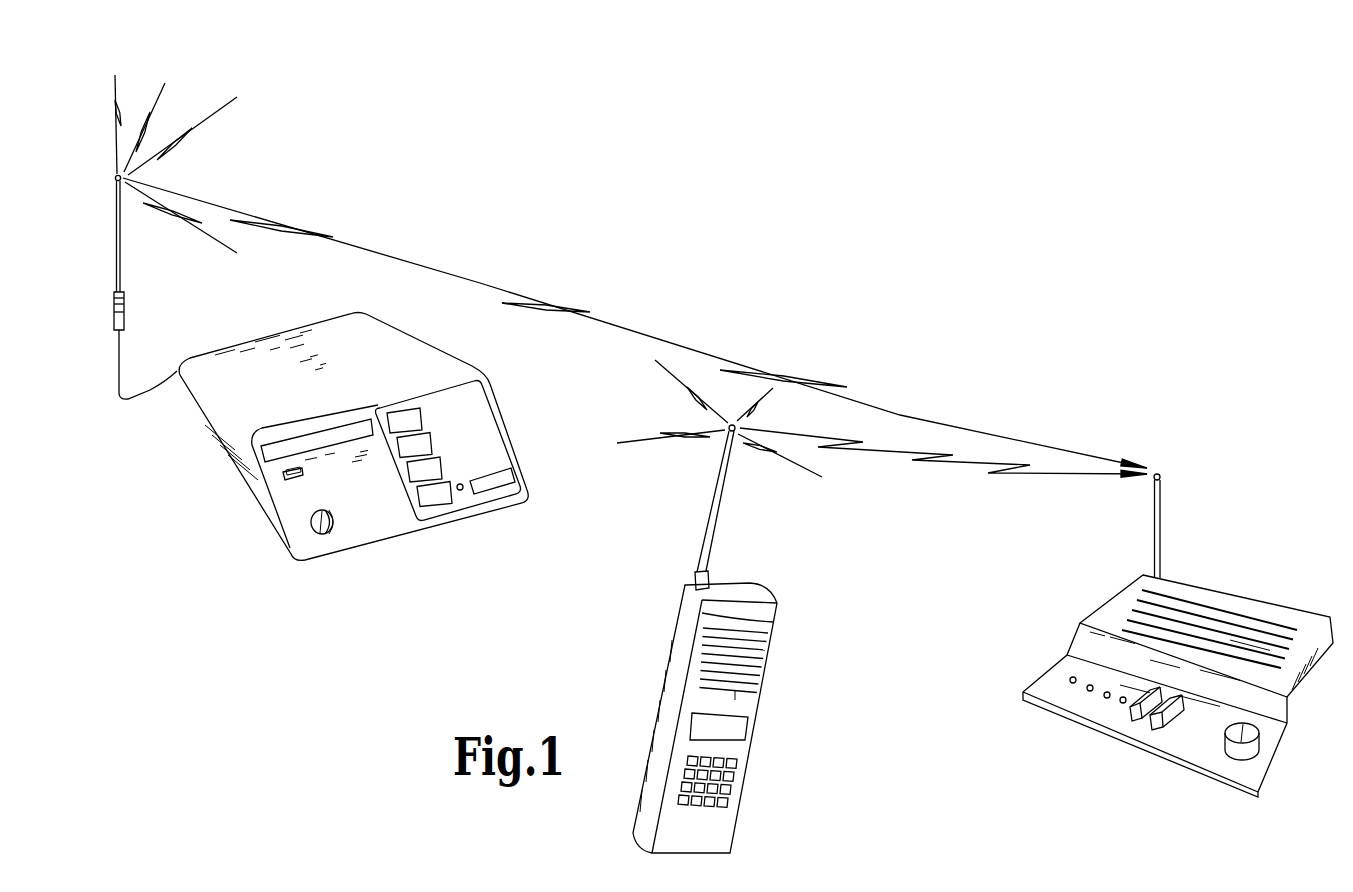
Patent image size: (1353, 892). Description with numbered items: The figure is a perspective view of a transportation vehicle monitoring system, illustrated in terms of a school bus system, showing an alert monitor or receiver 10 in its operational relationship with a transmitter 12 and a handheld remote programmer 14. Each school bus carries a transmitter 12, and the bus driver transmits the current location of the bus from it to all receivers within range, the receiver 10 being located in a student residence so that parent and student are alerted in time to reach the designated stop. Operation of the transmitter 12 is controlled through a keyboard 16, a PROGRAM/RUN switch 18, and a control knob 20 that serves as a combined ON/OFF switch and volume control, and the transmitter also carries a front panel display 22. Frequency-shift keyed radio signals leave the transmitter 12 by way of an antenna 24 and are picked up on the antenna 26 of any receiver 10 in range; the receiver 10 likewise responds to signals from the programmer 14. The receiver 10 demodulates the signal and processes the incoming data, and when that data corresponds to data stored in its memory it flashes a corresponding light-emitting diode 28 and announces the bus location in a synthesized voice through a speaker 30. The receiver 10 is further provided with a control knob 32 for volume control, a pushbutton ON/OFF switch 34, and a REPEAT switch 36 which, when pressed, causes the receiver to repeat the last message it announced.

The alert monitor 10 is at (1174, 682).
The transmitter 12 is at (461, 365).
The handheld remote programmer 14 is at (772, 648).
The keyboard 16 is at (497, 428).
The PROGRAM/RUN switch 18 is at (292, 481).
The control knob 20 is at (333, 534).
The front panel display 22 is at (277, 453).
The antenna 24 is at (121, 284).
The antenna 26 is at (1162, 532).
The light-emitting diode 28 is at (1070, 680).
The speaker 30 is at (1297, 622).
The control knob 32 is at (1259, 747).
The pushbutton ON/OFF switch 34 is at (1158, 724).
The REPEAT switch 36 is at (1142, 717).